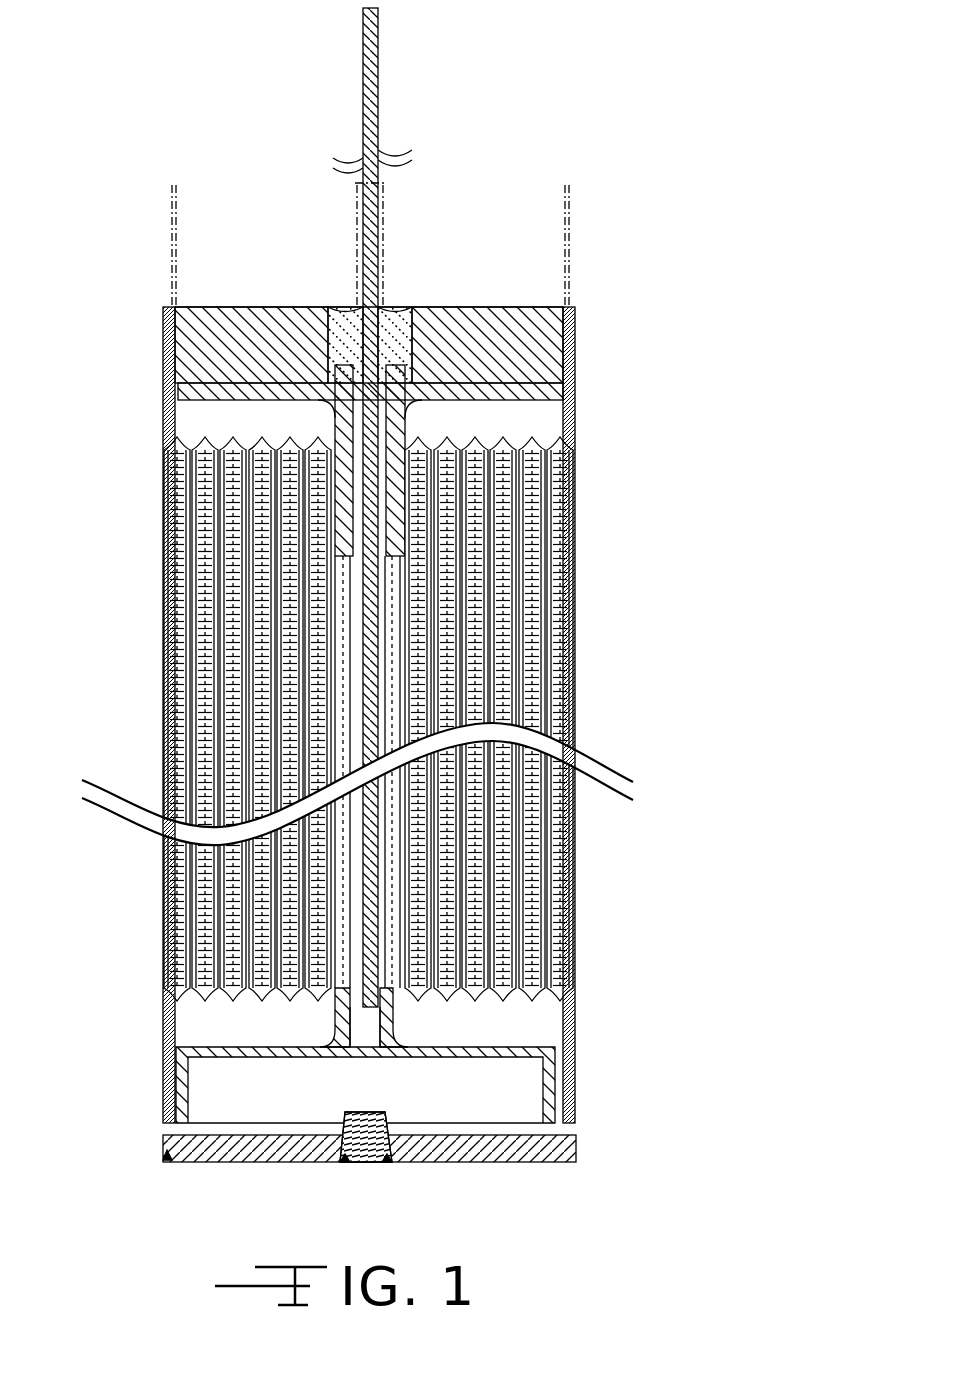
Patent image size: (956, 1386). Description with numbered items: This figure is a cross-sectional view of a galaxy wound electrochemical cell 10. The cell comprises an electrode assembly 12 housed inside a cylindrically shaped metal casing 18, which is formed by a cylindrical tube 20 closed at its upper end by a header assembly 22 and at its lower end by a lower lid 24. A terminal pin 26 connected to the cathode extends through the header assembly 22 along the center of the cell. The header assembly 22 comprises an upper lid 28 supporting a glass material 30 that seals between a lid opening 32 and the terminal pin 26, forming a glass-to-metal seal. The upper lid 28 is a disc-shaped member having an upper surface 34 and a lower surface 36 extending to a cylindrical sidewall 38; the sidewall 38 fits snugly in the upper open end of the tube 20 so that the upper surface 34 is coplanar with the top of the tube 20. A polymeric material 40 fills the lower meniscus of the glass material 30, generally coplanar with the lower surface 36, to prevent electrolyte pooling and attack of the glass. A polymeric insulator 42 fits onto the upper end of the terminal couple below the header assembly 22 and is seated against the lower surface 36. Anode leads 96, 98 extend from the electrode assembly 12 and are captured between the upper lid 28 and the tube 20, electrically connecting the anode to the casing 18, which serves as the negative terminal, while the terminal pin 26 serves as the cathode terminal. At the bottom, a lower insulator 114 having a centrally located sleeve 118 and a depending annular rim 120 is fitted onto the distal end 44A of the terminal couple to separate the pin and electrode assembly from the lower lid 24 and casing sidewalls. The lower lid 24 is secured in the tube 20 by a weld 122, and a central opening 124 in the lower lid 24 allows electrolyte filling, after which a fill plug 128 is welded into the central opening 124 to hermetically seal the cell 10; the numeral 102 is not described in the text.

The electrochemical cell 10 is at (742, 118).
The electrode assembly 12 is at (576, 372).
The casing 18 is at (637, 465).
The cylindrical tube 20 is at (577, 520).
The header assembly 22 is at (482, 285).
The lower lid 24 is at (520, 1162).
The terminal pin 26 is at (378, 70).
The upper lid 28 is at (535, 345).
The glass material 30 is at (395, 315).
The lid opening 32 is at (415, 335).
The upper surface 34 is at (218, 300).
The lower surface 36 is at (232, 388).
The cylindrical sidewall 38 is at (163, 345).
The polymeric material 40 is at (335, 372).
The polymeric insulator 42 is at (318, 466).
The distal end 44A is at (383, 968).
The anode lead 96 is at (385, 200).
The anode lead 98 is at (172, 245).
The base 102 is at (262, 1057).
The lower insulator 114 is at (522, 1040).
The sleeve 118 is at (340, 1030).
The annular rim 120 is at (567, 1080).
The weld 122 is at (166, 1160).
The central opening 124 is at (390, 1135).
The fill plug 128 is at (355, 1163).